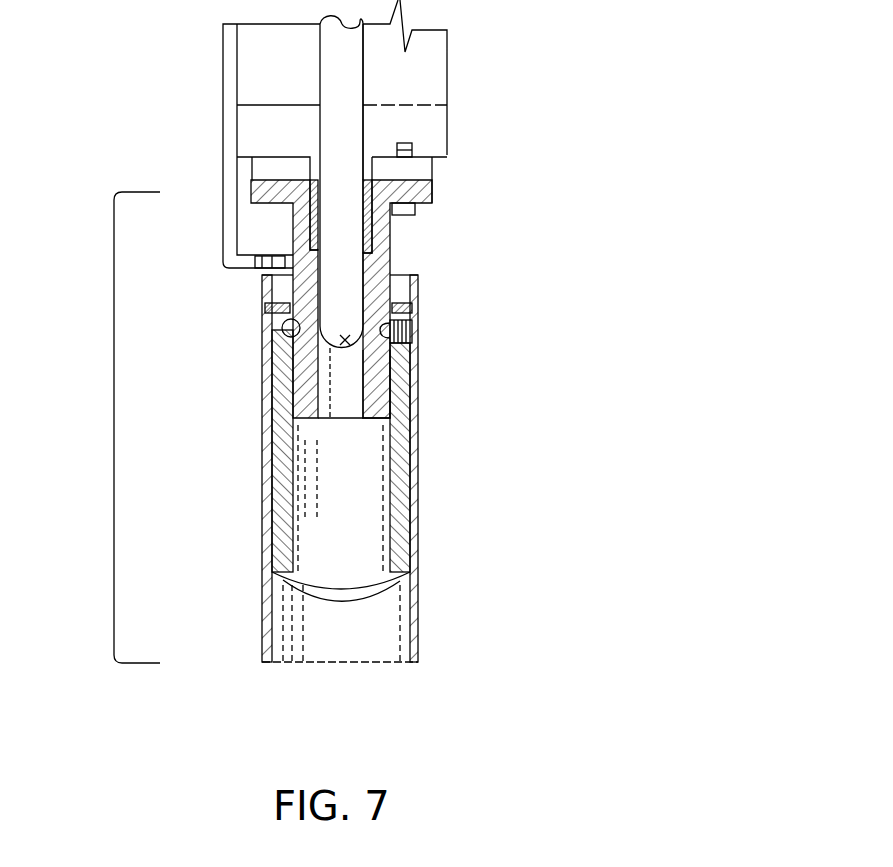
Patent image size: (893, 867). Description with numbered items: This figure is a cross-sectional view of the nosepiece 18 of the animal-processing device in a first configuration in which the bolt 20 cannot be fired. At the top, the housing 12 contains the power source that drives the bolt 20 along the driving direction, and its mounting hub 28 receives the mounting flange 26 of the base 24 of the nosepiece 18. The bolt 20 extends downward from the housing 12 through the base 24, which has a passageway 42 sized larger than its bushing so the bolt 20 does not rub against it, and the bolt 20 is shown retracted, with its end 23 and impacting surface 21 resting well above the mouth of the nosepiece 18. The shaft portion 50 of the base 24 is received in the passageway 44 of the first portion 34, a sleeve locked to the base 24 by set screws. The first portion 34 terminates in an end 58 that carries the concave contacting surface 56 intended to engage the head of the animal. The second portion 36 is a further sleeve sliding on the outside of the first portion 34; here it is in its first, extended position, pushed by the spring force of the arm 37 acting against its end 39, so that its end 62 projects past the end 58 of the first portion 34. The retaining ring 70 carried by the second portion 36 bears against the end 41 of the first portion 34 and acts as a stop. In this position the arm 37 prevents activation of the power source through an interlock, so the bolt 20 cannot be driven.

The housing 12 is at (432, 80).
The nosepiece 18 is at (104, 403).
The bolt 20 is at (345, 270).
The impacting surface 21 is at (357, 352).
The end 23 is at (342, 310).
The base 24 is at (395, 230).
The mounting flange 26 is at (417, 202).
The mounting hub 28 is at (423, 172).
The first portion 34 is at (410, 481).
The second portion 36 is at (424, 604).
The arm 37 is at (234, 266).
The end 39 is at (255, 268).
The end 41 is at (265, 292).
The passageway 42 is at (345, 370).
The passageway 44 is at (355, 542).
The shaft portion 50 is at (377, 397).
The contacting surface 56 is at (363, 592).
The end 58 is at (322, 592).
The end 62 is at (415, 662).
The retaining ring 70 is at (422, 303).